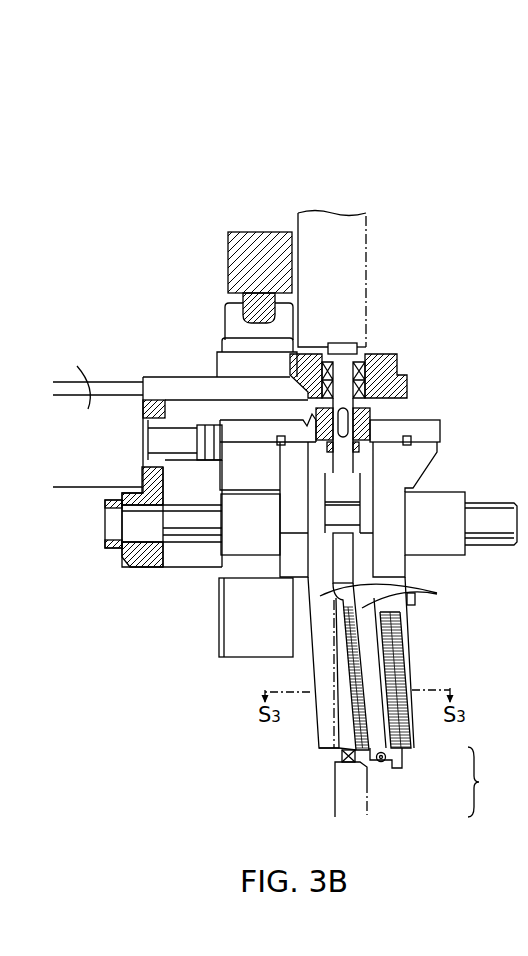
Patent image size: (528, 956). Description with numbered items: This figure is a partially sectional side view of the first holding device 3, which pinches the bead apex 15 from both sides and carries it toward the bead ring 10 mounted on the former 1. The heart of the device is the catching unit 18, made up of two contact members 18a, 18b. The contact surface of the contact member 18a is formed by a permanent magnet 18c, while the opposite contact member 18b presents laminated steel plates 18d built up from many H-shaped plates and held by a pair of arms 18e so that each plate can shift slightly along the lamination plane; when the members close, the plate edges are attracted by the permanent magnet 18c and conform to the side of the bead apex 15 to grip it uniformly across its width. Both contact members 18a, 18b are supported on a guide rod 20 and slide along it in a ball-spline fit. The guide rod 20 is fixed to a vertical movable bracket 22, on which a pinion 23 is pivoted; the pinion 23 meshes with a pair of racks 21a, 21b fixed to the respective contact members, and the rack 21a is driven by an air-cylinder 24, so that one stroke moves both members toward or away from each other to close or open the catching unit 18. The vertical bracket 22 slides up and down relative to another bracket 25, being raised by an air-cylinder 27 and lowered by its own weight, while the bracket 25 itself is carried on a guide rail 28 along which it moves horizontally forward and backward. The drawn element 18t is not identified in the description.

The former 1 is at (373, 803).
The first holding device 3 is at (240, 700).
The bead ring 10 is at (346, 763).
The bead apex 15 is at (342, 739).
The catching unit 18 is at (486, 782).
The contact member 18a is at (340, 739).
The contact member 18b is at (402, 763).
The permanent magnet 18c is at (333, 667).
The laminated steel plates 18d is at (410, 672).
The arms 18e is at (401, 597).
The rack teeth 18t is at (405, 643).
The guide rod 20 is at (491, 504).
The rack 21a is at (265, 428).
The rack 21b is at (413, 432).
The vertical movable bracket 22 is at (143, 568).
The pinion 23 is at (368, 413).
The air-cylinder 24 is at (98, 414).
The bracket 25 is at (238, 567).
The air-cylinder 27 is at (242, 640).
The guide rail 28 is at (228, 294).